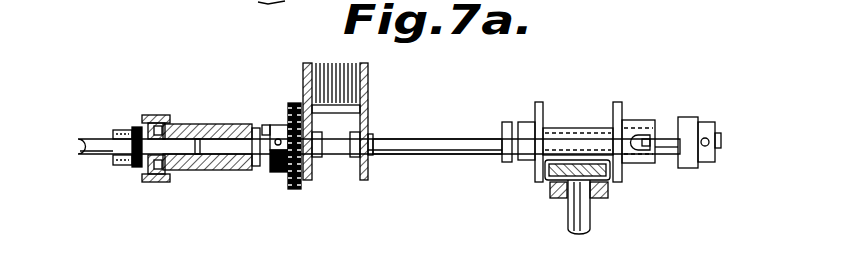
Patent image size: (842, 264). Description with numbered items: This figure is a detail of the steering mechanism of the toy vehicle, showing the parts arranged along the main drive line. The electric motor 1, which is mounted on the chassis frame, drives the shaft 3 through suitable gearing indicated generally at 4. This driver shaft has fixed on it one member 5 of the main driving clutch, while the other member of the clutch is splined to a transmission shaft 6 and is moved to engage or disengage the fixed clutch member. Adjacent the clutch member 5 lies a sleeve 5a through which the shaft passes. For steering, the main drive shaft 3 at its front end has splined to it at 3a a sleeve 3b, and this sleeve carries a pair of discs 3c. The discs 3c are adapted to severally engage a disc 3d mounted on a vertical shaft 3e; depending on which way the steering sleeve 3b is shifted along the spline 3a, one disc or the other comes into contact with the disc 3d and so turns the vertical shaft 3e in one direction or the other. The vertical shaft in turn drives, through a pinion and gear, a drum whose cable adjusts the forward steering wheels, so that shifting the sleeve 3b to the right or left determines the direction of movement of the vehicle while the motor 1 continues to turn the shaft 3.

The electric motor 1 is at (322, 85).
The shaft 3 is at (437, 139).
The spline 3a is at (640, 133).
The sleeve 3b is at (568, 130).
The discs 3c is at (537, 108).
The disc 3d is at (548, 180).
The vertical shaft 3e is at (590, 217).
The gearing 4 is at (298, 183).
The main driving clutch member 5 is at (276, 172).
The bearing sleeve 5a is at (208, 165).
The transmission shaft 6 is at (100, 147).